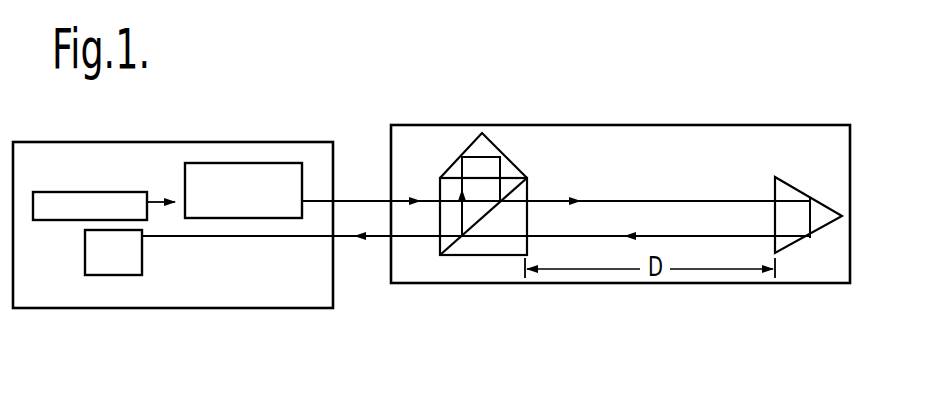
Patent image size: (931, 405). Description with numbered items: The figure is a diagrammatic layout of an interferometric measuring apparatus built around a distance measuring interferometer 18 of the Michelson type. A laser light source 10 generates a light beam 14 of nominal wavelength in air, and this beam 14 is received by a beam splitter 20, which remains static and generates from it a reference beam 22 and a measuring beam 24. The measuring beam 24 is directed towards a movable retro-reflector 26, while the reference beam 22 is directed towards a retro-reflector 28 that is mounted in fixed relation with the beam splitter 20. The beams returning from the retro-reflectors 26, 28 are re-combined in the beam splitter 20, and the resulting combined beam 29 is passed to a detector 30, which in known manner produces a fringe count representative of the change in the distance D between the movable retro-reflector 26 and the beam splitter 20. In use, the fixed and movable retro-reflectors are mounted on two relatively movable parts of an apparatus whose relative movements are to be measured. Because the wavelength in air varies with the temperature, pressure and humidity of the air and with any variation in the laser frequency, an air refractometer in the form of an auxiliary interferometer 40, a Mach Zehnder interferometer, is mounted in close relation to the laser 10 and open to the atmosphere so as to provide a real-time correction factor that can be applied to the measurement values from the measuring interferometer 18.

The laser light source 10 is at (55, 196).
The light beam 14 is at (159, 198).
The distance measuring interferometer 18 is at (718, 132).
The beam splitter 20 is at (478, 248).
The reference beam 22 is at (457, 166).
The measuring beam 24 is at (614, 198).
The movable retro-reflector 26 is at (826, 212).
The retro-reflector 28 is at (510, 163).
The combined beam 29 is at (250, 240).
The detector 30 is at (87, 259).
The auxiliary interferometer 40 is at (236, 172).